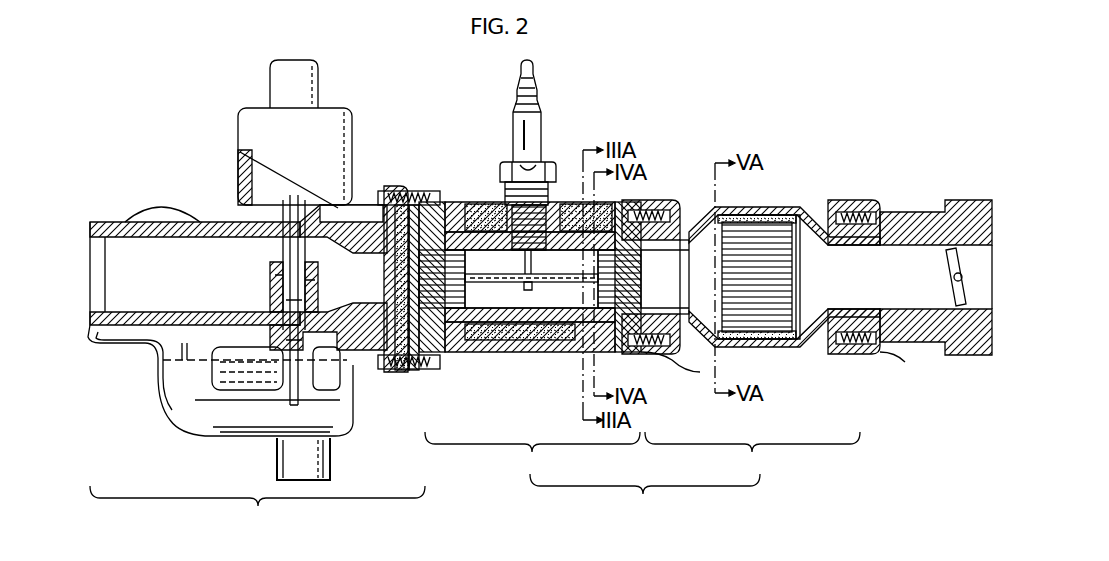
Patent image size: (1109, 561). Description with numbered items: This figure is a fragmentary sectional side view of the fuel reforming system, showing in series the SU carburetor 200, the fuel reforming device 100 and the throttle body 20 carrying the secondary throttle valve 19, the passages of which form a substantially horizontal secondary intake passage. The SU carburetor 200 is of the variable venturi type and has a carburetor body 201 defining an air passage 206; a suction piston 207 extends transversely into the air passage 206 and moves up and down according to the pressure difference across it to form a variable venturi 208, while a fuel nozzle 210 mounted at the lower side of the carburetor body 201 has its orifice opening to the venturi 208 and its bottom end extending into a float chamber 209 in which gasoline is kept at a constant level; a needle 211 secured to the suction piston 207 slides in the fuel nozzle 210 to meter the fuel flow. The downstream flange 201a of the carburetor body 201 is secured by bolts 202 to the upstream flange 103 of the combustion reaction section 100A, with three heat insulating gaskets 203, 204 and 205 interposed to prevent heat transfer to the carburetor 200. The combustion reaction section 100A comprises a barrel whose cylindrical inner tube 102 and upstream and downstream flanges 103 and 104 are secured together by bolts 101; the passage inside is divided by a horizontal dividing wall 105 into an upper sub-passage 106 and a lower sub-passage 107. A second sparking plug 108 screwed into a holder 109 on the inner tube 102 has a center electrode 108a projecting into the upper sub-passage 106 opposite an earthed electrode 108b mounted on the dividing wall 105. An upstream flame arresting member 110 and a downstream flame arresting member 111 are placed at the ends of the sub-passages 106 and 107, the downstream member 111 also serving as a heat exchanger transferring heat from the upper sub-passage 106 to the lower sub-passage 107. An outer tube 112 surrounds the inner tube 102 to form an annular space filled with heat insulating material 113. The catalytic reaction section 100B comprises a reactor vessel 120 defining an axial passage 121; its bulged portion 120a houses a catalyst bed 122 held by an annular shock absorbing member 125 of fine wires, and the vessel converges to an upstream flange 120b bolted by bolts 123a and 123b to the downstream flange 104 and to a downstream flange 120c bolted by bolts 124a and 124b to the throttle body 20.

The secondary throttle valve 19 is at (948, 276).
The throttle body 20 is at (946, 348).
The fuel reforming device 100 is at (645, 494).
The combustion reaction section 100A is at (532, 453).
The catalytic reaction section 100B is at (752, 453).
The bolts 101 is at (520, 348).
The cylindrical inner tube 102 is at (545, 342).
The upstream flange 103 is at (432, 355).
The downstream flange 104 is at (640, 355).
The horizontal dividing wall 105 is at (506, 284).
The upper sub-passage 106 is at (466, 232).
The lower sub-passage 107 is at (512, 340).
The second sparking plug 108 is at (525, 128).
The center electrode 108a is at (531, 256).
The earthed electrode 108b is at (532, 283).
The holder 109 is at (490, 225).
The upstream flame arresting member 110 is at (398, 205).
The downstream flame arresting member 111 is at (632, 280).
The outer tube 112 is at (650, 208).
The heat insulating material 113 is at (466, 255).
The reactor vessel 120 is at (800, 214).
The bulged portion 120a is at (742, 342).
The upstream flange 120b is at (690, 392).
The downstream flange 120c is at (862, 355).
The axial passage 121 is at (688, 240).
The catalyst bed 122 is at (762, 232).
The bolt 123a is at (682, 205).
The bolt 123b is at (690, 355).
The bolt 124a is at (840, 214).
The bolt 124b is at (845, 350).
The annular shock absorbing member 125 is at (798, 345).
The SU carburetor 200 is at (257, 510).
The carburetor body 201 is at (100, 224).
The downstream flange 201a is at (380, 190).
The bolts 202 is at (385, 190).
The gasket 203 is at (392, 370).
The gasket 204 is at (403, 372).
The gasket 205 is at (415, 372).
The air passage 206 is at (113, 298).
The suction piston 207 is at (293, 278).
The variable venturi 208 is at (293, 306).
The float chamber 209 is at (245, 403).
The fuel nozzle 210 is at (292, 338).
The needle 211 is at (336, 428).